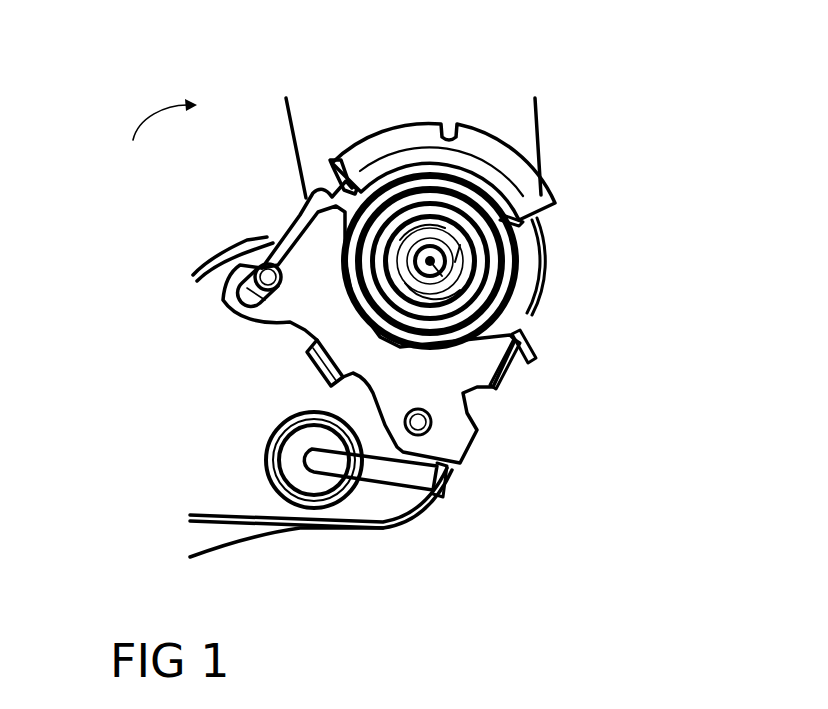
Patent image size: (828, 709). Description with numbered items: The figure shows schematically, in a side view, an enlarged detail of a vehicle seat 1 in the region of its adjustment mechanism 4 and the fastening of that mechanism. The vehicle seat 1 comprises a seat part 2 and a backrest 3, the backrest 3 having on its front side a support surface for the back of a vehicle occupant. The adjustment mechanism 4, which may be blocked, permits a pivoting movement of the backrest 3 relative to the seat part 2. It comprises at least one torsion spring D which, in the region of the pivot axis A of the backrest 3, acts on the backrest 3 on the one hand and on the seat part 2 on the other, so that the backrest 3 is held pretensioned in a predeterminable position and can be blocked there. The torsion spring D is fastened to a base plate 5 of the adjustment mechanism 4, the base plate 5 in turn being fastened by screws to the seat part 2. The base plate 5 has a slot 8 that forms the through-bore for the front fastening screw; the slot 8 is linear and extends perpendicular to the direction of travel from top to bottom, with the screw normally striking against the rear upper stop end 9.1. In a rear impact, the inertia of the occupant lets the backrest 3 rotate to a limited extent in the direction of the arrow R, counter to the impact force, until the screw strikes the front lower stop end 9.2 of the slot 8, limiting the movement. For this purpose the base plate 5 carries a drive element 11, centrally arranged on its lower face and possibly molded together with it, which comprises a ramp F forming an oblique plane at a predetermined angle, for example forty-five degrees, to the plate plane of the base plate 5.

The vehicle seat 1 is at (82, 67).
The seat part 2 is at (377, 534).
The backrest 3 is at (535, 103).
The adjustment mechanism 4 is at (575, 259).
The base plate 5 is at (453, 368).
The slot 8 is at (225, 282).
The rear upper stop end 9.1 is at (278, 250).
The front lower stop end 9.2 is at (223, 293).
The drive element 11 is at (275, 428).
The pivot axis A is at (477, 290).
The torsion spring D is at (548, 207).
The ramp F is at (325, 378).
The arrow R is at (175, 116).